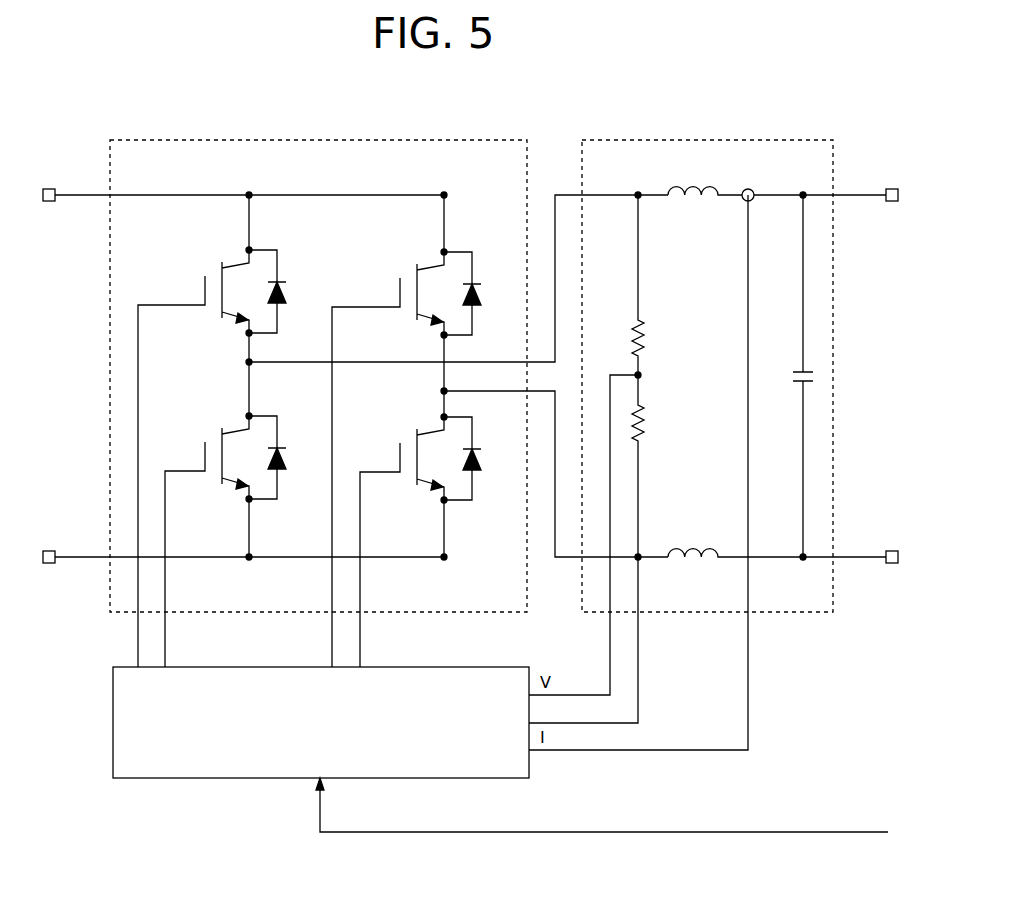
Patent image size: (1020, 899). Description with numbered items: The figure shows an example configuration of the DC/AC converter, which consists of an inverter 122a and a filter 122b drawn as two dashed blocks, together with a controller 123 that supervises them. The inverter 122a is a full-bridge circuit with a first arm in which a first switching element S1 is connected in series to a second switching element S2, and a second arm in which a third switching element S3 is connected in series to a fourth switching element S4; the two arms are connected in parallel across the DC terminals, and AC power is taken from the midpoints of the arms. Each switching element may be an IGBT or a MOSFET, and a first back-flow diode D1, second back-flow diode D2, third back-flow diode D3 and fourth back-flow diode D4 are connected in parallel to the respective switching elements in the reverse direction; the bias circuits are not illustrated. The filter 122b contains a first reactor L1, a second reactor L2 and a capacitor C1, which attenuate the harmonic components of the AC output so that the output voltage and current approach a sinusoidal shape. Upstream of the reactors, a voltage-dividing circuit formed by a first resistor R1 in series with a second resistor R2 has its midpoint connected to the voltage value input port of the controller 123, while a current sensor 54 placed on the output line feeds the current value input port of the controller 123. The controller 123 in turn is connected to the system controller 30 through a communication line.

The inverter 122a is at (484, 140).
The filter 122b is at (790, 140).
The controller 123 is at (483, 667).
The current sensor 54 is at (752, 190).
The system controller 30 is at (622, 812).
The first switching element S1 is at (195, 453).
The second switching element S2 is at (208, 536).
The third switching element S3 is at (389, 454).
The fourth switching element S4 is at (403, 537).
The first back-flow diode D1 is at (284, 291).
The second back-flow diode D2 is at (284, 457).
The third back-flow diode D3 is at (479, 293).
The fourth back-flow diode D4 is at (479, 458).
The first reactor L1 is at (705, 207).
The second reactor L2 is at (777, 536).
The first resistor R1 is at (655, 285).
The second resistor R2 is at (655, 466).
The capacitor C1 is at (786, 376).